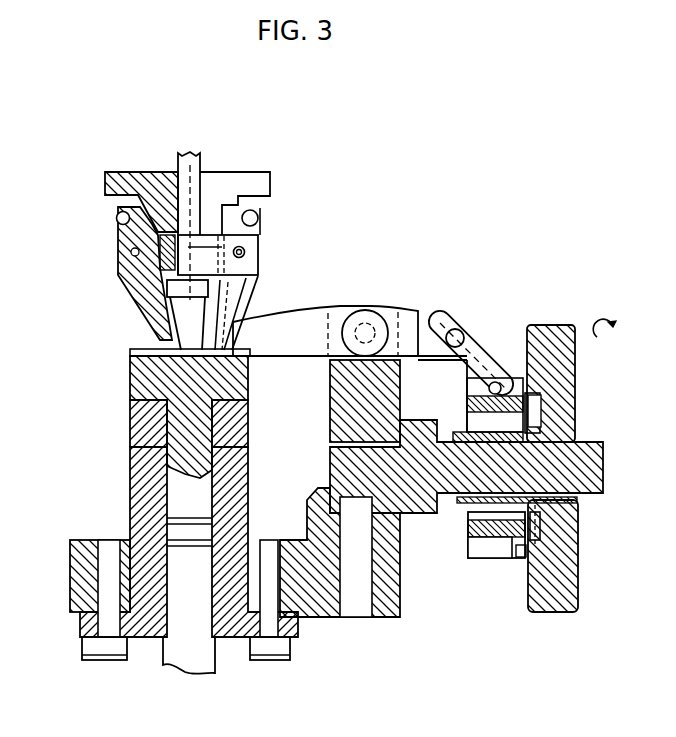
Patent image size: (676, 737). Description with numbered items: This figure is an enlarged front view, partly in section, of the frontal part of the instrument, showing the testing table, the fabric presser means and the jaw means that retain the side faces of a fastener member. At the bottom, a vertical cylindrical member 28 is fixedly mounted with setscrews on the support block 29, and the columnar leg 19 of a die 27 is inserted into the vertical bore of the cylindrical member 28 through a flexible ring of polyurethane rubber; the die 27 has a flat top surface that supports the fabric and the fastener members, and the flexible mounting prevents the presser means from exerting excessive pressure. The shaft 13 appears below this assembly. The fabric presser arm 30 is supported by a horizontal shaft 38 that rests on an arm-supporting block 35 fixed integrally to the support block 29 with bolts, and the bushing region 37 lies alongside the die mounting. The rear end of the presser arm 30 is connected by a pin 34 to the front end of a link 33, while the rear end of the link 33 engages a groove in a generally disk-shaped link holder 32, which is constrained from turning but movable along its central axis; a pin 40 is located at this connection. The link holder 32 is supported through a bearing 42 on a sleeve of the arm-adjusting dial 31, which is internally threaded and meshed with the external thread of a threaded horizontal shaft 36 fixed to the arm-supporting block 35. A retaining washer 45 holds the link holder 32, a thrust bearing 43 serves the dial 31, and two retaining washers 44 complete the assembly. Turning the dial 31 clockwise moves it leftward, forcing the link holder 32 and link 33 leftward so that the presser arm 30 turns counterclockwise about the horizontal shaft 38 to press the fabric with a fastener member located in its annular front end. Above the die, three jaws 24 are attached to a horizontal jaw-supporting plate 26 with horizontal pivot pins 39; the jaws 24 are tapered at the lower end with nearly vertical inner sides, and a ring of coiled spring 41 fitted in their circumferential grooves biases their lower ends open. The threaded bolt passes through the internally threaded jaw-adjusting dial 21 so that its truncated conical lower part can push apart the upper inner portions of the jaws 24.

The shaft 13 is at (165, 660).
The columnar leg 19 is at (232, 490).
The jaw-adjusting dial 21 is at (226, 176).
The jaws 24 is at (130, 284).
The jaw-supporting plate 26 is at (250, 251).
The die 27 is at (132, 384).
The vertical cylindrical member 28 is at (130, 482).
The support block 29 is at (72, 562).
The fabric presser arm 30 is at (300, 328).
The arm-adjusting dial 31 is at (553, 330).
The link holder 32 is at (520, 378).
The link 33 is at (438, 316).
The pin 34 is at (459, 329).
The arm-supporting block 35 is at (335, 410).
The threaded horizontal shaft 36 is at (602, 450).
The bushing 37 is at (130, 418).
The horizontal shaft 38 is at (370, 312).
The horizontal pivot pins 39 is at (118, 246).
The pivot pin 40 is at (488, 389).
The coiled spring 41 is at (259, 216).
The bearing 42 is at (493, 540).
The thrust bearing 43 is at (578, 603).
The retaining washers 44 is at (547, 522).
The retaining washer 45 is at (467, 508).